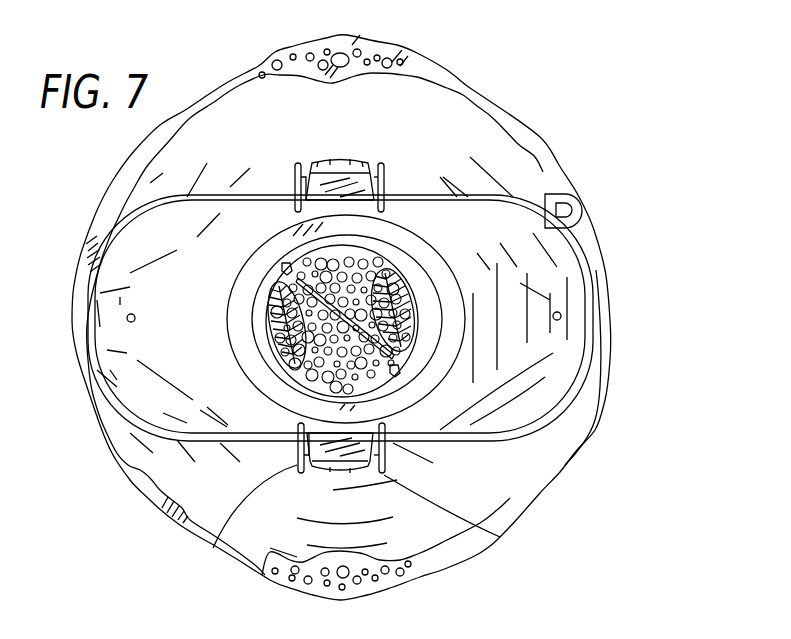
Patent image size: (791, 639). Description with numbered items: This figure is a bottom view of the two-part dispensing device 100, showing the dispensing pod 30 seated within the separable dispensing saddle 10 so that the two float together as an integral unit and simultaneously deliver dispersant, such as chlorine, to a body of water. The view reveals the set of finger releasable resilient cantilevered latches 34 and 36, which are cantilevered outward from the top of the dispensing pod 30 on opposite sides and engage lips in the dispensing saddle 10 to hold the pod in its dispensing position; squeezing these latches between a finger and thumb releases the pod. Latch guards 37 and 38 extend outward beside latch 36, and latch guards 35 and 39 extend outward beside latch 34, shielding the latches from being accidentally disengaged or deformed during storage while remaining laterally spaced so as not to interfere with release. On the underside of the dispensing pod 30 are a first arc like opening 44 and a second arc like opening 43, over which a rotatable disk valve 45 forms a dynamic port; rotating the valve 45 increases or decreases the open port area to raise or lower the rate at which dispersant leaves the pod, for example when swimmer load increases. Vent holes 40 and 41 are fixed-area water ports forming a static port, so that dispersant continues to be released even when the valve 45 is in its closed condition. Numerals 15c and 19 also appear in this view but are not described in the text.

The dispenser saddle 10 is at (505, 110).
The vent hole 15c is at (352, 50).
The lens window 19 is at (150, 233).
The dispensing pod 30 is at (543, 392).
The resilient cantilevered latch 34 is at (353, 471).
The latch guard 35 is at (385, 397).
The resilient cantilevered latch 36 is at (341, 164).
The latch guard 37 is at (385, 172).
The latch guard 38 is at (295, 173).
The latch guard 39 is at (575, 194).
The vent hole 40 is at (561, 317).
The vent hole 41 is at (128, 321).
The second arc like opening 43 is at (427, 297).
The first arc like opening 44 is at (273, 350).
The rotatable disk valve 45 is at (397, 425).
The two-part dispensing device 100 is at (636, 128).